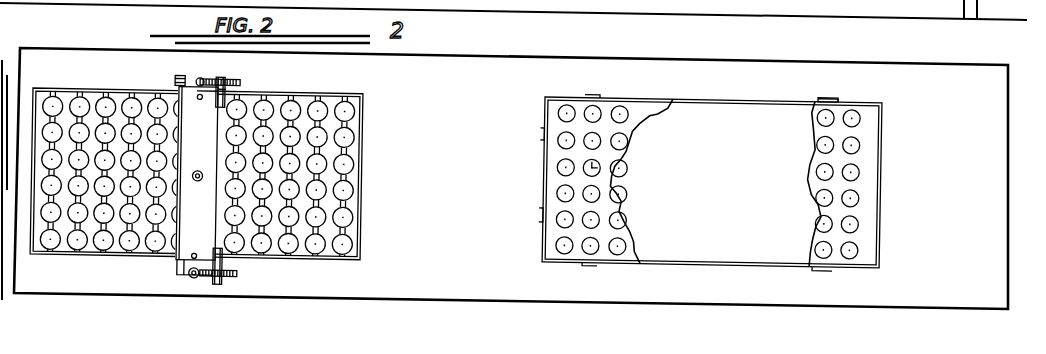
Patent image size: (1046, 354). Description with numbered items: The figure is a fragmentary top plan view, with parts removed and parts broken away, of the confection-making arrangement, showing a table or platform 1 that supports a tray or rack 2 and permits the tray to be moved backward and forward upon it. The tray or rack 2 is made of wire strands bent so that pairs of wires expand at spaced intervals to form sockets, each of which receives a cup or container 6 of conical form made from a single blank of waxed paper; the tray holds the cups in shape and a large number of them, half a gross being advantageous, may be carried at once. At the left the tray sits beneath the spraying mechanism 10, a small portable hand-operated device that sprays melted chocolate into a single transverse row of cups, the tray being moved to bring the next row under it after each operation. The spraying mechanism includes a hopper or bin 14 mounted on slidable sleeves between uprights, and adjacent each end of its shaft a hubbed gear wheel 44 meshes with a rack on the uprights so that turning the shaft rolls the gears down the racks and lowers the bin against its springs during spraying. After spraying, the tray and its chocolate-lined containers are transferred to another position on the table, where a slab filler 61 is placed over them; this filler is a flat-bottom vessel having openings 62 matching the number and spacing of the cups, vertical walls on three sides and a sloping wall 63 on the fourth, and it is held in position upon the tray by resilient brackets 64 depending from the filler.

The table or platform 1 is at (588, 78).
The tray or rack 2 is at (213, 174).
The cup or container 6 is at (344, 164).
The spraying mechanism 10 is at (208, 174).
The hopper or bin 14 is at (205, 232).
The hubbed gear wheel 44 is at (220, 78).
The slab filler 61 is at (630, 128).
The openings 62 is at (598, 170).
The sloping wall 63 is at (870, 167).
The resilient brackets 64 is at (833, 97).